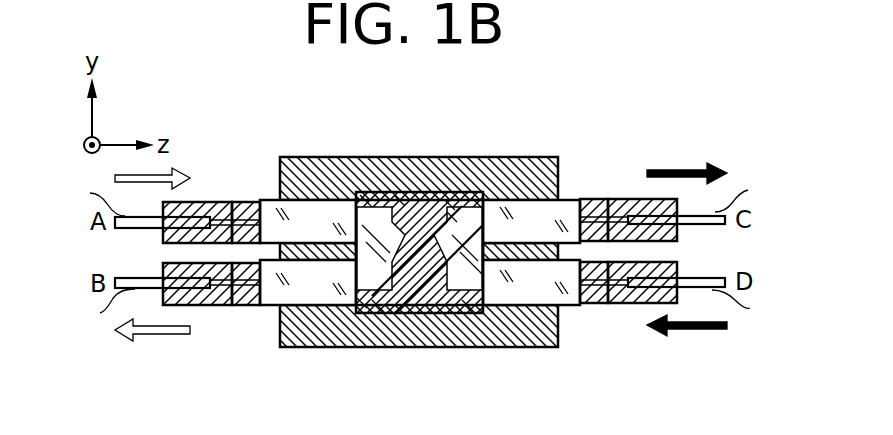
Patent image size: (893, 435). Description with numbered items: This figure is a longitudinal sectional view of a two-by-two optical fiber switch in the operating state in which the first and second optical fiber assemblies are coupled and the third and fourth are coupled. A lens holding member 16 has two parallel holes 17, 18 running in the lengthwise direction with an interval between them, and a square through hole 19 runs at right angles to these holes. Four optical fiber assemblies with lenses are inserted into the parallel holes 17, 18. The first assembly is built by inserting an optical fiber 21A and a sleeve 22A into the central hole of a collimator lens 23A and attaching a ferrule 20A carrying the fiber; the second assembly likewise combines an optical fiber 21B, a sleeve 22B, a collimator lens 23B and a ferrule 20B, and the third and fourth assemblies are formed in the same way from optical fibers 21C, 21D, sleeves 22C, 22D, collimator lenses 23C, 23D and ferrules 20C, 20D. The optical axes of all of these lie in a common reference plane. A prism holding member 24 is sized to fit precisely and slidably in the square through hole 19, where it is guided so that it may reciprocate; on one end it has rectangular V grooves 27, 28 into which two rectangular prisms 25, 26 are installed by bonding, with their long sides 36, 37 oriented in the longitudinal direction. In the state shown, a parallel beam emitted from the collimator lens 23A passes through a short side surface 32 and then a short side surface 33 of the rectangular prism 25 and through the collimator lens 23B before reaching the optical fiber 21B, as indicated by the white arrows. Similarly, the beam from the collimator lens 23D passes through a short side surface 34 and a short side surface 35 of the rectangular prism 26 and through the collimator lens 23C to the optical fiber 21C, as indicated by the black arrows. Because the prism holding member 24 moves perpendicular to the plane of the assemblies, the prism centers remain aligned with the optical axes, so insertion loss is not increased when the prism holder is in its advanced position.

The lens holding member 16 is at (346, 178).
The parallel hole 17 is at (297, 201).
The parallel hole 18 is at (297, 305).
The square through hole 19 is at (415, 191).
The ferrule 20A is at (247, 149).
The ferrule 20B is at (192, 305).
The ferrule 20C is at (636, 199).
The ferrule 20D is at (640, 304).
The optical fiber 21A is at (232, 204).
The optical fiber 21B is at (230, 306).
The optical fiber 21C is at (600, 203).
The optical fiber 21D is at (597, 303).
The sleeve 22A is at (118, 183).
The sleeve 22B is at (118, 333).
The sleeve 22C is at (715, 175).
The sleeve 22D is at (718, 329).
The collimator lens 23A is at (256, 206).
The collimator lens 23B is at (262, 308).
The collimator lens 23C is at (575, 203).
The collimator lens 23D is at (572, 303).
The prism holding member 24 is at (425, 298).
The rectangular prism 25 is at (392, 312).
The rectangular prism 26 is at (440, 195).
The rectangular V groove 27 is at (400, 192).
The rectangular V groove 28 is at (437, 314).
The short side surface 32 is at (372, 198).
The short side surface 33 is at (385, 313).
The short side surface 34 is at (465, 302).
The short side surface 35 is at (450, 204).
The long side 36 is at (355, 314).
The long side 37 is at (488, 205).